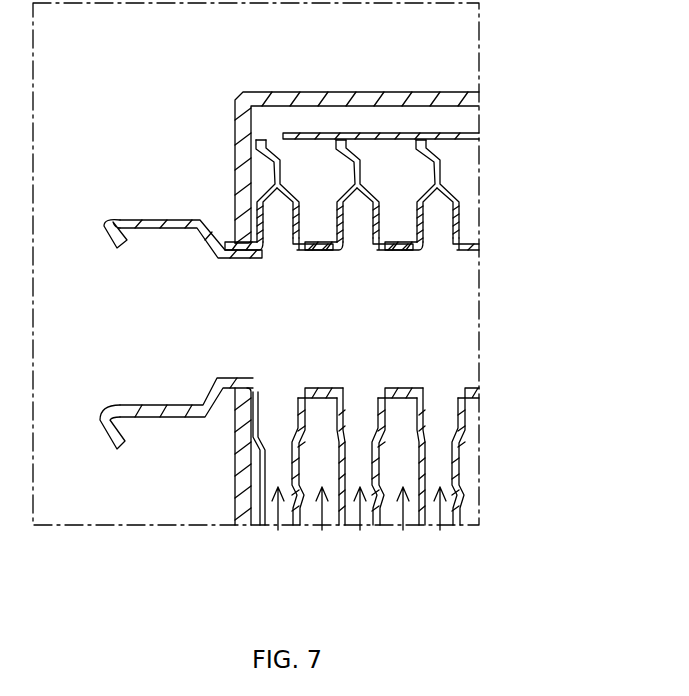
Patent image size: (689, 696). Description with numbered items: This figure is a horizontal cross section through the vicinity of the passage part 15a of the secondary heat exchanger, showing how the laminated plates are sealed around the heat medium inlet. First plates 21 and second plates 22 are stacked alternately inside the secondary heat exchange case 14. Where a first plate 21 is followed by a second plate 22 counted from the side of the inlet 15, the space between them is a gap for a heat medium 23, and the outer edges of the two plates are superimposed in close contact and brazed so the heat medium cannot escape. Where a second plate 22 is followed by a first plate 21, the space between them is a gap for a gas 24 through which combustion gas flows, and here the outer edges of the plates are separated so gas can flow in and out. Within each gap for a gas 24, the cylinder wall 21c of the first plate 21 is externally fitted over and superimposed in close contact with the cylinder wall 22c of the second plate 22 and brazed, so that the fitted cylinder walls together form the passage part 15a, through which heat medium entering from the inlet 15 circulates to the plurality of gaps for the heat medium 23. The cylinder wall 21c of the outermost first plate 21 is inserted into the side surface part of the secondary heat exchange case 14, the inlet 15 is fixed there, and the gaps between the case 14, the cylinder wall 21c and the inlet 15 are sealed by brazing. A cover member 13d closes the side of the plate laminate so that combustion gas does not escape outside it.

The cover member 13d is at (452, 140).
The secondary heat exchange case 14 is at (283, 92).
The inlet 15 is at (158, 233).
The passage part 15a is at (437, 342).
The first plate 21 is at (270, 525).
The cylinder wall 21c is at (228, 243).
The second plate 22 is at (306, 525).
The cylinder wall 22c is at (316, 240).
The gap for a heat medium 23 is at (274, 530).
The gap for a gas 24 is at (330, 525).